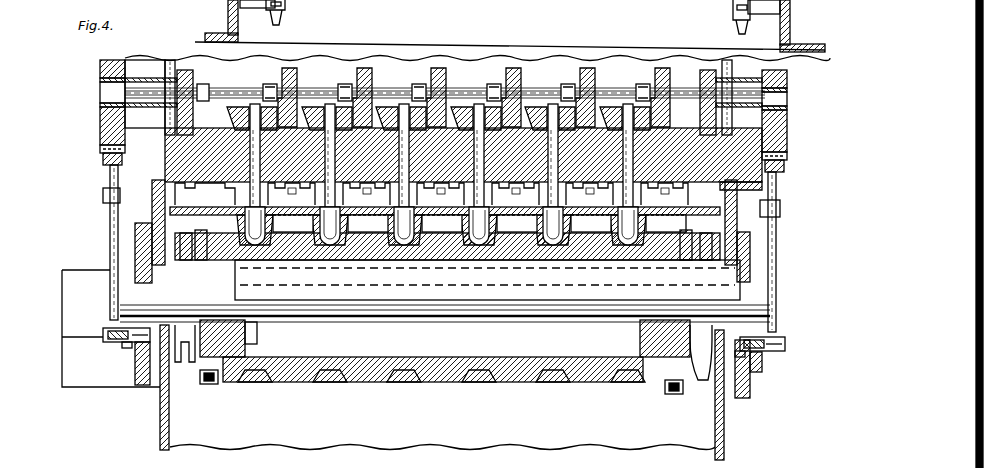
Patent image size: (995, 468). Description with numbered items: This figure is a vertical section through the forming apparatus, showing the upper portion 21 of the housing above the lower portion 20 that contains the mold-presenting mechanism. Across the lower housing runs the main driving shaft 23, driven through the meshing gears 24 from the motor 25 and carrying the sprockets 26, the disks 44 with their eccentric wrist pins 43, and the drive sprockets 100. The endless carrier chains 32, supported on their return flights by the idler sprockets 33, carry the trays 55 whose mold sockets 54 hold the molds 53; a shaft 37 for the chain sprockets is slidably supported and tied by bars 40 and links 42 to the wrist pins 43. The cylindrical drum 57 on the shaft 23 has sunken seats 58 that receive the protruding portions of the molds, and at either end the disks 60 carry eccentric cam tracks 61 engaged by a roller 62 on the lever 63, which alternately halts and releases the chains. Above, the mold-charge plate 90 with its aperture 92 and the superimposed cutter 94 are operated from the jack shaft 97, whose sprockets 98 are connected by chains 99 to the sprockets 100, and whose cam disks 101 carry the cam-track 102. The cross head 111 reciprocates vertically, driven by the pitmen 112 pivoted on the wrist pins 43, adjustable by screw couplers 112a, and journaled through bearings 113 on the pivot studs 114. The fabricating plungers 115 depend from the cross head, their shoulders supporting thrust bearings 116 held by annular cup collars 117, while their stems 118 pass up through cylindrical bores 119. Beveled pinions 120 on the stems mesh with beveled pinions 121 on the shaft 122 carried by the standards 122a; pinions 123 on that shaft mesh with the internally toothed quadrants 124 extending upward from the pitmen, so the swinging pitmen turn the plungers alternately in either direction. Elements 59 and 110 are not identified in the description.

The lower portion of housing 20 is at (160, 426).
The upper portion of housing 21 is at (730, 75).
The main driving shaft 23 is at (445, 310).
The meshing gears 24 is at (140, 386).
The motor 25 is at (100, 286).
The sprockets 26 is at (150, 262).
The endless carrier chains 32 is at (244, 262).
The idler sprockets 33 is at (736, 12).
The shaft 37 is at (398, 245).
The bars 40 is at (172, 236).
The links 42 is at (120, 348).
The eccentric wrist pins 43 is at (104, 330).
The disks 44 is at (752, 280).
The molds 53 is at (480, 245).
The mold sockets 54 is at (395, 248).
The trays 55 is at (330, 304).
The cylindrical drum 57 is at (520, 380).
The sunken seats 58 is at (440, 248).
The bolt 59 is at (206, 386).
The disks 60 is at (190, 350).
The eccentric cam tracks 61 is at (240, 345).
The roller 62 is at (700, 268).
The lever 63 is at (165, 252).
The mold-charge plate 90 is at (515, 194).
The aperture 92 is at (440, 194).
The cutter 94 is at (664, 194).
The jack shaft 97 is at (372, 100).
The sprockets 98 is at (732, 86).
The chains 99 is at (153, 208).
The sprockets 100 is at (140, 360).
The cam disks 101 is at (216, 84).
The cam-track 102 is at (210, 92).
The cam block 110 is at (589, 194).
The cross head 111 is at (272, 150).
The pitmen 112 is at (110, 256).
The screw couplers 112a is at (781, 205).
The bearings 113 is at (104, 162).
The pivot studs 114 is at (101, 150).
The fabricating plungers 115 is at (345, 250).
The thrust bearings 116 is at (291, 194).
The annular cup collars 117 is at (366, 194).
The stems 118 is at (205, 194).
The cylindrical bores 119 is at (510, 135).
The beveled pinions 120 is at (240, 117).
The beveled pinions 121 is at (296, 72).
The horizontally disposed shaft 122 is at (128, 92).
The standards 122a is at (448, 95).
The pinions 123 is at (128, 52).
The quadrants 124 is at (101, 118).